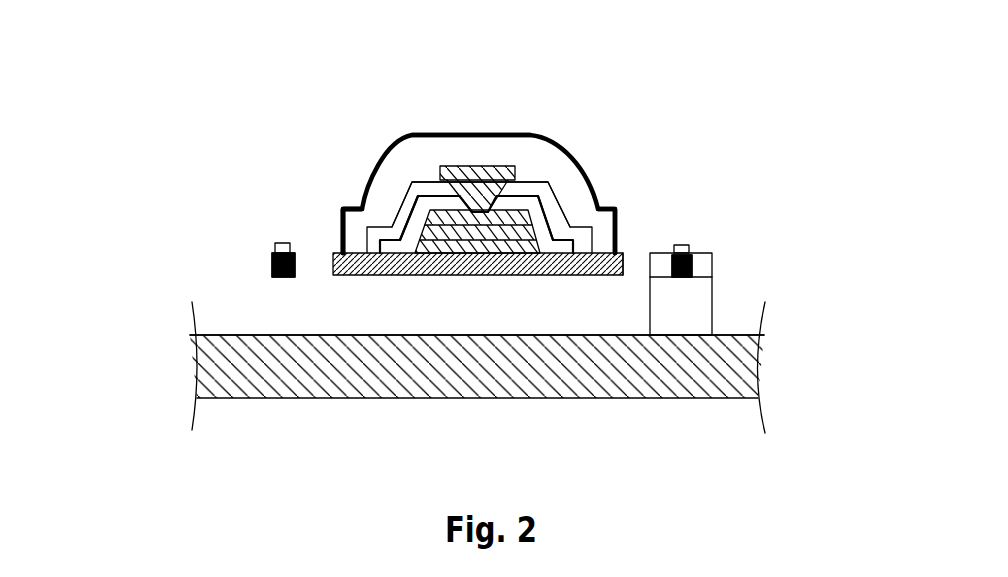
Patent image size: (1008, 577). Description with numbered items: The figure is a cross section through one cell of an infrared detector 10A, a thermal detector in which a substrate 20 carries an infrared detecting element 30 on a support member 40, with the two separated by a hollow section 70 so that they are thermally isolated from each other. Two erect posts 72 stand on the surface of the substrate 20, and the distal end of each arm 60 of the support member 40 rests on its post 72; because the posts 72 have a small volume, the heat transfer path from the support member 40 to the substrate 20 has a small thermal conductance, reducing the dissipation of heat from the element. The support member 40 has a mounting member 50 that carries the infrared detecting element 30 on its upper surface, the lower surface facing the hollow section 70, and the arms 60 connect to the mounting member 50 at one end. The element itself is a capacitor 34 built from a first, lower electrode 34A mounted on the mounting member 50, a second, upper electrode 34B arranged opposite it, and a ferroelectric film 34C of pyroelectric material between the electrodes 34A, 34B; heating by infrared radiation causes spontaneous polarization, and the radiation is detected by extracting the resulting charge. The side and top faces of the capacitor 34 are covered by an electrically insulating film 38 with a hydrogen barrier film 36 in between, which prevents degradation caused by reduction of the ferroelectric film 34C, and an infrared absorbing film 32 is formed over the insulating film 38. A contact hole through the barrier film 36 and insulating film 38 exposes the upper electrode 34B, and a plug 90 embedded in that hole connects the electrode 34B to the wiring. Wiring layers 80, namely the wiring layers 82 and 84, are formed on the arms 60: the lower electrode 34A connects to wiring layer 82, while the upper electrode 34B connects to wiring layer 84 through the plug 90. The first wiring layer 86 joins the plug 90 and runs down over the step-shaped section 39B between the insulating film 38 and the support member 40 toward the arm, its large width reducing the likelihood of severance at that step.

The infrared detector 10A is at (682, 92).
The substrate 20 is at (590, 387).
The infrared detecting element 30 is at (603, 201).
The infrared absorbing film 32 is at (537, 150).
The capacitor 34 is at (425, 154).
The first electrode 34A is at (397, 218).
The second electrode 34B is at (435, 220).
The ferroelectric film 34C is at (412, 215).
The hydrogen barrier film 36 is at (518, 202).
The electrically insulating film 38 is at (537, 178).
The step-shaped section 39B is at (362, 233).
The support member 40 is at (385, 277).
The mounting member 50 is at (625, 252).
The arm 60 is at (273, 267).
The hollow section 70 is at (418, 313).
The post 72 is at (712, 303).
The wiring layers 80 is at (478, 225).
The wiring layer 82 is at (681, 245).
The wiring layer 84 is at (281, 244).
The first wiring layer 86 is at (481, 202).
The plug 90 is at (483, 165).